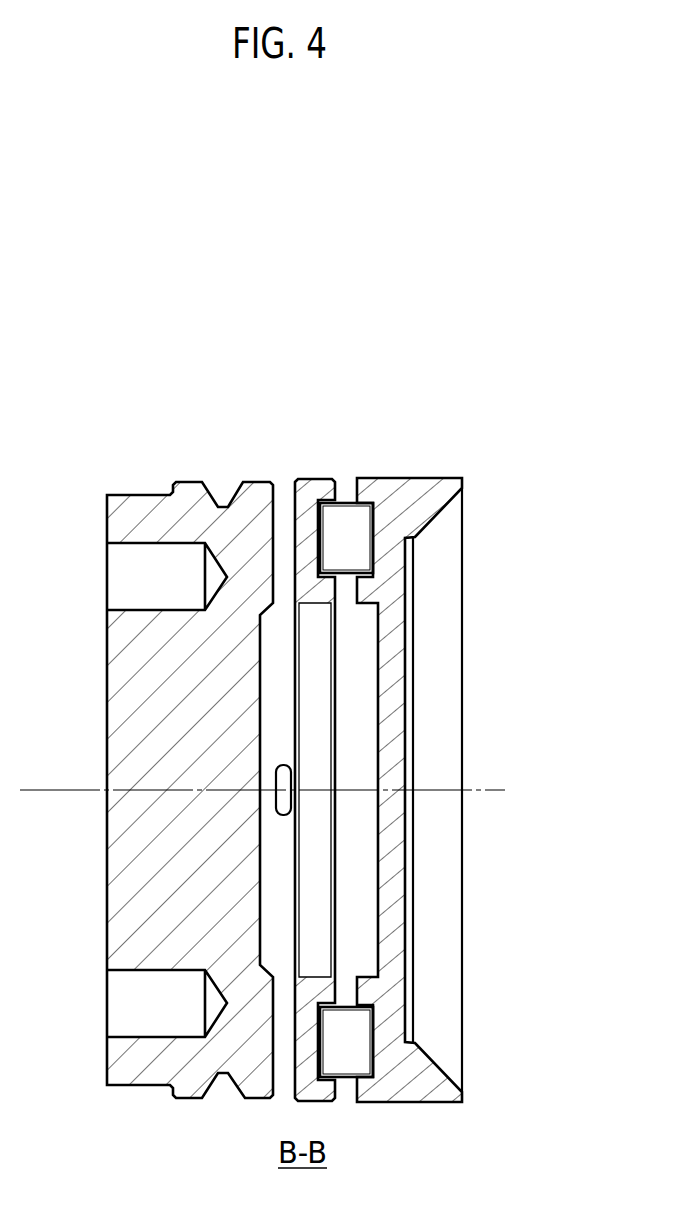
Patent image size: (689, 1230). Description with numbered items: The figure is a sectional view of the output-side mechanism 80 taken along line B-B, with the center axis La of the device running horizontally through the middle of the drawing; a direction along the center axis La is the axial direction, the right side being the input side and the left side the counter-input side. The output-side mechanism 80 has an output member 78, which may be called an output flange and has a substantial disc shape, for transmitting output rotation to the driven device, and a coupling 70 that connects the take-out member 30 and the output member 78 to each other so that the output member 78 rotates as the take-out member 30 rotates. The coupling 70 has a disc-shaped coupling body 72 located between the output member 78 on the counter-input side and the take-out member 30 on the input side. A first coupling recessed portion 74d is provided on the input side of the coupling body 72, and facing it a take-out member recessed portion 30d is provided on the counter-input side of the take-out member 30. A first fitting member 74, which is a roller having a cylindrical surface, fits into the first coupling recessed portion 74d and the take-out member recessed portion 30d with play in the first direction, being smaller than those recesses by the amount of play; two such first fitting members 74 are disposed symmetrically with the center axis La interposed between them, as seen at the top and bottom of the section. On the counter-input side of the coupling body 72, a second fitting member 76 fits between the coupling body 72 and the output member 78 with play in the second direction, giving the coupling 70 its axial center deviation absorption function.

The take-out member 30 is at (437, 492).
The take-out member recessed portion 30d is at (348, 513).
The coupling 70 is at (312, 466).
The coupling body 72 is at (310, 481).
The first fitting member 74 is at (362, 510).
The first coupling recessed portion 74d is at (350, 540).
The second fitting member 76 is at (280, 802).
The output member 78 is at (120, 508).
The output-side mechanism 80 is at (567, 427).
The center axis La is at (265, 826).